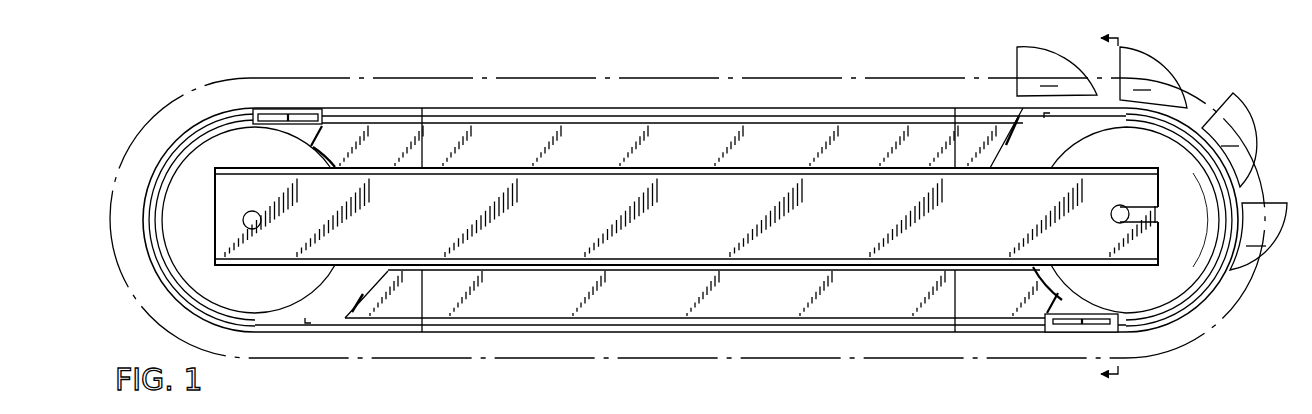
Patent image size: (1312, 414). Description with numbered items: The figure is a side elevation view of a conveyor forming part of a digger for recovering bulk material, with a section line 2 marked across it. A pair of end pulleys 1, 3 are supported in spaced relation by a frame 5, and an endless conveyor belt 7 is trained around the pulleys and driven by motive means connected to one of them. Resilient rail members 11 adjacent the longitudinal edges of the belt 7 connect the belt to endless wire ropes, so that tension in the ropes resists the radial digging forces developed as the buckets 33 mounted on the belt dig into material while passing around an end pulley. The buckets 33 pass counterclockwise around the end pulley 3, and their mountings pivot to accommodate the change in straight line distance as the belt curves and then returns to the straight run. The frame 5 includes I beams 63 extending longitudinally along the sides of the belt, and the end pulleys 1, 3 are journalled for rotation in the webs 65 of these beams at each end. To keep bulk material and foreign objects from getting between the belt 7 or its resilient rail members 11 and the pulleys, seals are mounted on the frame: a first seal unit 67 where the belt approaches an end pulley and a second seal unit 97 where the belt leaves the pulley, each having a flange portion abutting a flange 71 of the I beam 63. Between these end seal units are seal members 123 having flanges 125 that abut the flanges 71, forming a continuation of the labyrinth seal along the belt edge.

The end pulley 1 is at (226, 142).
The section line 2- 2 is at (1100, 209).
The end pulley 3 is at (1188, 290).
The frame 5 is at (710, 231).
The endless conveyor belt 7 is at (203, 121).
The resilient rail member 11 is at (1047, 116).
The bucket 33 is at (1017, 60).
The I beam 63 is at (213, 211).
The web 65 is at (1165, 223).
The first seal unit 67 is at (367, 103).
The flange 71 is at (733, 177).
The second seal unit 97 is at (971, 99).
The seal member 123 is at (701, 146).
The flange 125 is at (830, 157).